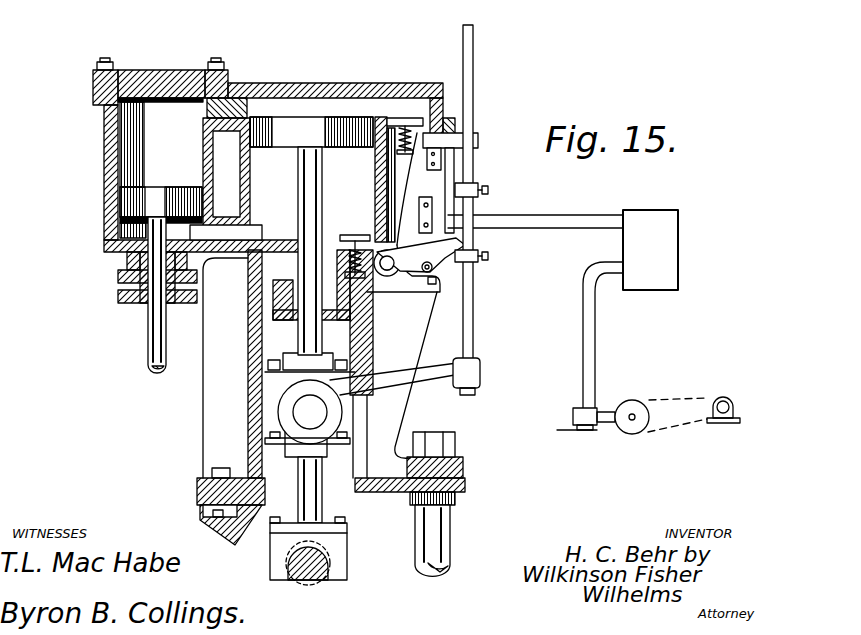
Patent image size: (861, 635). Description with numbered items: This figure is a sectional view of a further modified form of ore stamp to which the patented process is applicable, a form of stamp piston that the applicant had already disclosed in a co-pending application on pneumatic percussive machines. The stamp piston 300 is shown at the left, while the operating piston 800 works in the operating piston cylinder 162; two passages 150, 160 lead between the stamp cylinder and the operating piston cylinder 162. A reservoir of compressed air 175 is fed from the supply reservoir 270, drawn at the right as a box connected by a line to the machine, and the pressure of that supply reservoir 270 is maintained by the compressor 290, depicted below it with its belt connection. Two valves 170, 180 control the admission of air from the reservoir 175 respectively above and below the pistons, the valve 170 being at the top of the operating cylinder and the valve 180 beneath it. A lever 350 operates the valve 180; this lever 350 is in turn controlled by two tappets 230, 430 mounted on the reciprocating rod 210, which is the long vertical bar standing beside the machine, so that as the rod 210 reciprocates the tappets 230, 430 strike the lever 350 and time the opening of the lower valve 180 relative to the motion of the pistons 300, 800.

The passage 150 is at (224, 114).
The passage 160 is at (233, 233).
The valve 170 is at (406, 114).
The reservoir of compressed air 175 is at (397, 168).
The operating piston cylinder 162 is at (334, 251).
The valve 180 is at (357, 240).
The reciprocating rod 210 is at (474, 312).
The tappet 230 is at (478, 189).
The supply reservoir 270 is at (668, 200).
The compressor 290 is at (632, 398).
The stamp piston 300 is at (137, 203).
The lever 350 is at (401, 295).
The tappet 430 is at (477, 260).
The operating piston 800 is at (300, 130).